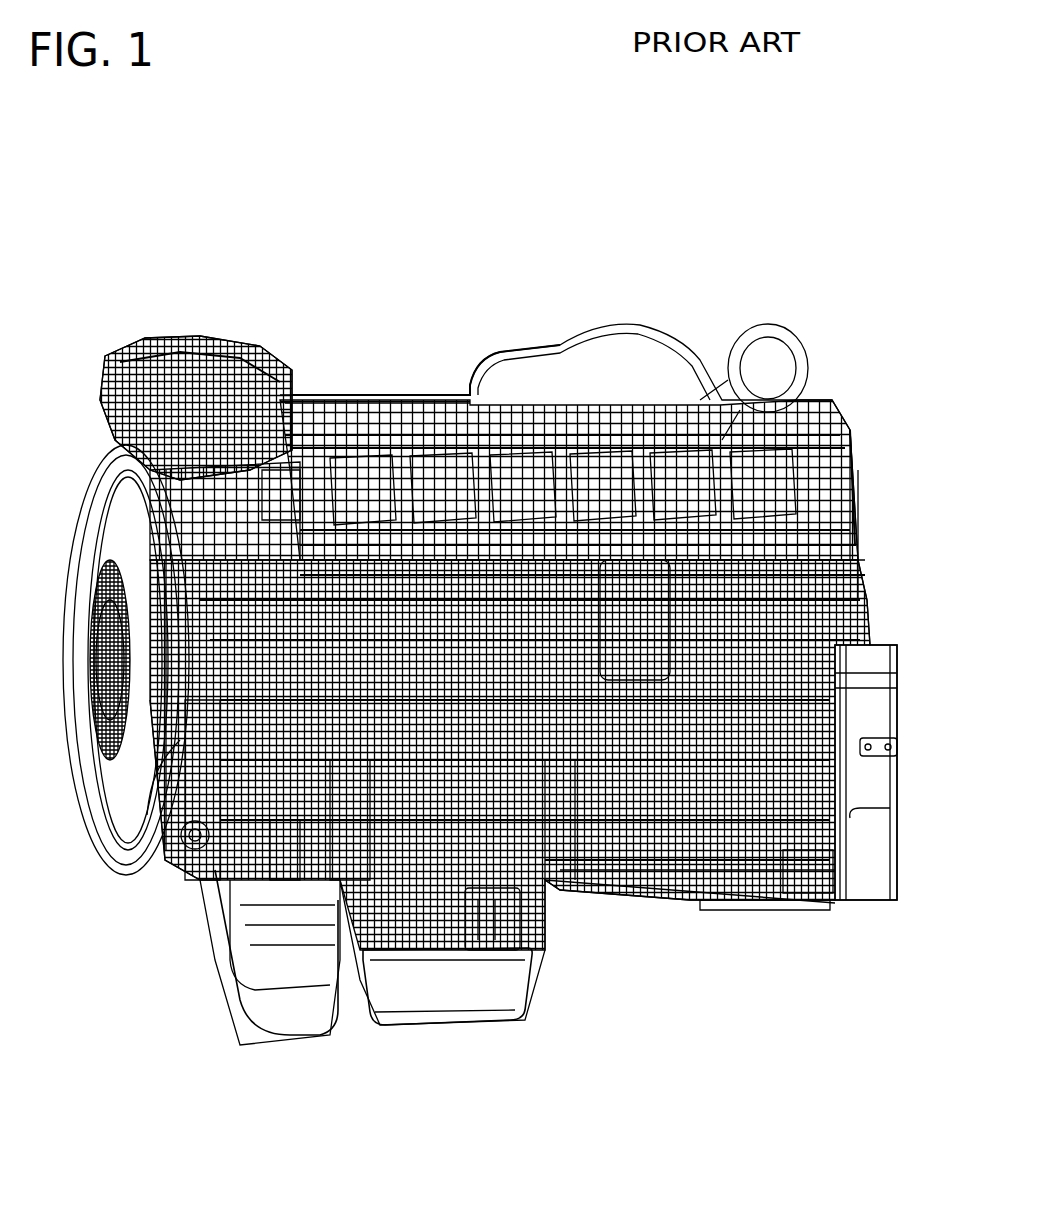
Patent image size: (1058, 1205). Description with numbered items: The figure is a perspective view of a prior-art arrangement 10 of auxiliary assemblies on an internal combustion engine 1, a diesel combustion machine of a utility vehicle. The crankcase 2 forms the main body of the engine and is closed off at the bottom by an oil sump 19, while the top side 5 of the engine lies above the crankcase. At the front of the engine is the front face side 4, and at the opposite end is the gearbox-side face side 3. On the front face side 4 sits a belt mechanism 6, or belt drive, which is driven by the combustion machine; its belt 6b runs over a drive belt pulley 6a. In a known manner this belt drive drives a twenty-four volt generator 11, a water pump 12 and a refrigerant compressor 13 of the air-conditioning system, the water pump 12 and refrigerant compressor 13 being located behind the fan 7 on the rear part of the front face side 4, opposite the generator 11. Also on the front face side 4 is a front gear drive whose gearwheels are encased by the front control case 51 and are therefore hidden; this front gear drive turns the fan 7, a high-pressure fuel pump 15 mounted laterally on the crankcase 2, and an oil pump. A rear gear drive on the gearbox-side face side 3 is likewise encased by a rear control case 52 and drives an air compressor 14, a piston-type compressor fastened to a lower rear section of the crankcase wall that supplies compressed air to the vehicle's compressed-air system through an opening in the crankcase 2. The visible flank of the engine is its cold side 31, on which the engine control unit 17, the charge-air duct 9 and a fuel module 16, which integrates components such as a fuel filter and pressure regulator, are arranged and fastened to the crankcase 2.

The internal combustion engine 1 is at (523, 684).
The crankcase 2 is at (700, 765).
The gearbox-side face side 3 is at (870, 532).
The front face side 4 is at (185, 848).
The top side 5 is at (362, 410).
The belt mechanism 6 is at (197, 678).
The drive belt pulley 6a is at (227, 747).
The belt 6b is at (202, 717).
The fan 7 is at (147, 815).
The charge-air duct 9 is at (281, 608).
The arrangement 10 is at (486, 137).
The generator 11 is at (268, 870).
The water pump 12 is at (107, 425).
The refrigerant compressor 13 is at (200, 345).
The air compressor 14 is at (683, 850).
The high-pressure fuel pump 15 is at (349, 730).
The fuel module 16 is at (563, 870).
The engine control unit 17 is at (633, 595).
The oil sump 19 is at (437, 975).
The cold side 31 is at (720, 870).
The front control case 51 is at (276, 830).
The rear control case 52 is at (877, 810).